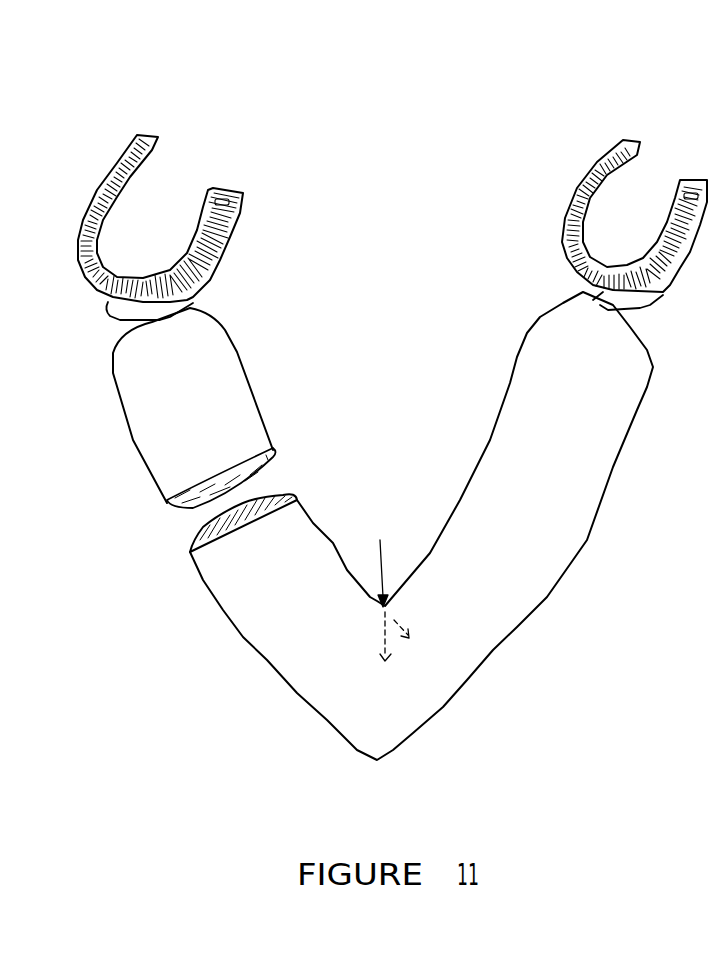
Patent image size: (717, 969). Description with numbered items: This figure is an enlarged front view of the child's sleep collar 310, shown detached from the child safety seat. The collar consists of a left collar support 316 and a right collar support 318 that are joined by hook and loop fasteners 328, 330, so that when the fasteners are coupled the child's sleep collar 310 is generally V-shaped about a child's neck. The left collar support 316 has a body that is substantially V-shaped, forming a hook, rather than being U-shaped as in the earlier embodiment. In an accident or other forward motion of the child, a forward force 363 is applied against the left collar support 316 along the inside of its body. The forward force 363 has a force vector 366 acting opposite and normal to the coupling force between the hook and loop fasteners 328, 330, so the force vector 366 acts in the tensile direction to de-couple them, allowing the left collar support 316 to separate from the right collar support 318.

The child's sleep collar 310 is at (338, 263).
The left collar support 316 is at (497, 607).
The right collar support 318 is at (143, 397).
The hook and loop fastener 328 is at (190, 546).
The hook and loop fastener 330 is at (177, 508).
The forward force 363 is at (380, 577).
The force vector 366 is at (397, 620).